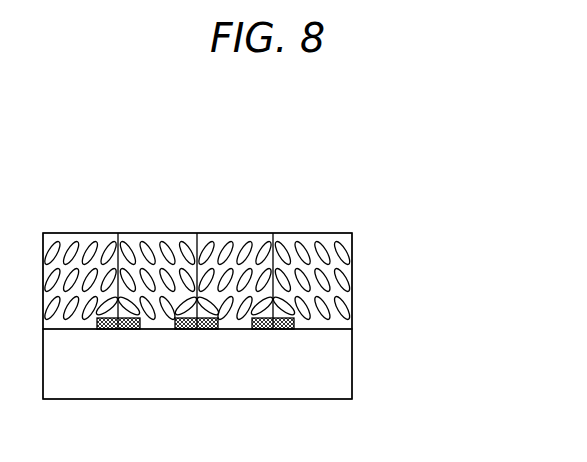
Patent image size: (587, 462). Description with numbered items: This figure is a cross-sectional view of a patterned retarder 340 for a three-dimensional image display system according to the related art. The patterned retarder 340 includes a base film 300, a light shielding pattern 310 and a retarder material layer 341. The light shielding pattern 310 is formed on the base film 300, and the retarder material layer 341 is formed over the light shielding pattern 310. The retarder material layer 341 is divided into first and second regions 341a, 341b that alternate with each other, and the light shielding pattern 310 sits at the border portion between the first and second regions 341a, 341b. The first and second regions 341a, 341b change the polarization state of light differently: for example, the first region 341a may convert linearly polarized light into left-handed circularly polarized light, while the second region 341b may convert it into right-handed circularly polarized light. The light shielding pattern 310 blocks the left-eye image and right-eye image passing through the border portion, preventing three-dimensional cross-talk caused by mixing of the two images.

The base film 300 is at (340, 393).
The light shielding pattern 310 is at (117, 330).
The patterned retarder 340 is at (384, 193).
The retarder material layer 341 is at (337, 157).
The first region 341a is at (80, 233).
The second region 341b is at (163, 233).